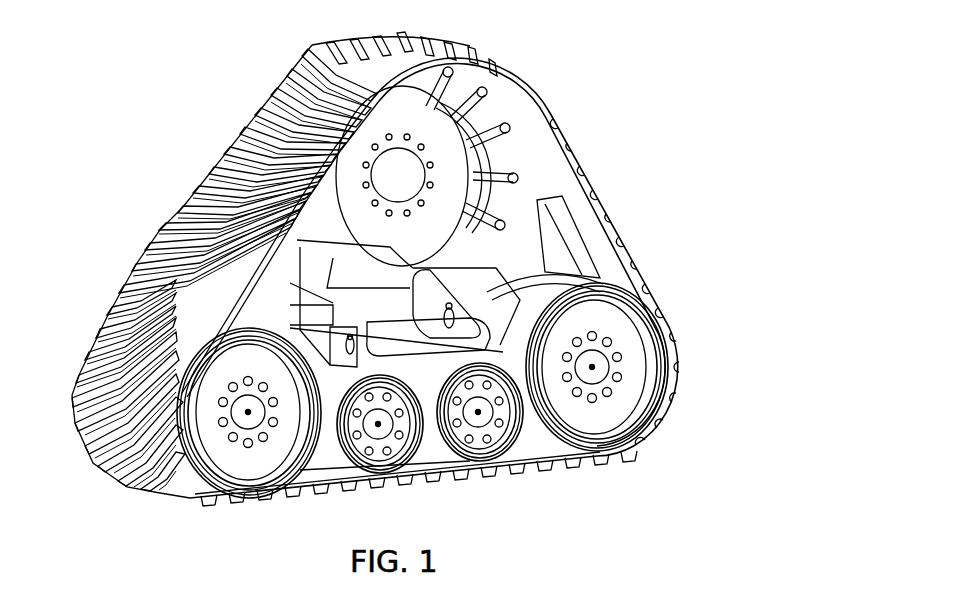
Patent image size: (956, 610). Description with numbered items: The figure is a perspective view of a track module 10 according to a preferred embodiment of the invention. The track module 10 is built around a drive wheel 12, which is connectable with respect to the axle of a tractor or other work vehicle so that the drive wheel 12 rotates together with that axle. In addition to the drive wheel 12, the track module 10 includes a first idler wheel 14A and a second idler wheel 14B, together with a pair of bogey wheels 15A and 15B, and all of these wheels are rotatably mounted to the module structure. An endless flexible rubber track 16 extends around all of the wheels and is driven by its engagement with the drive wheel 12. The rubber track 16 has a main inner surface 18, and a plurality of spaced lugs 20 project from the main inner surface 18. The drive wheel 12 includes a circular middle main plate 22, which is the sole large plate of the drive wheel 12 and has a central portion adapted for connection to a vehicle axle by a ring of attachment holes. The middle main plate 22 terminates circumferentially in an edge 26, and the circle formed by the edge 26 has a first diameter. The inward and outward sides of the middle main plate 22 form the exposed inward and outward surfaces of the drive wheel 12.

The track module 10 is at (648, 113).
The drive wheel 12 is at (450, 130).
The first idler wheel 14A is at (217, 452).
The second idler wheel 14B is at (592, 417).
The bogey wheel 15A is at (343, 460).
The bogey wheel 15B is at (500, 443).
The endless flexible rubber track 16 is at (255, 123).
The main inner surface 18 is at (545, 157).
The spaced lugs 20 is at (552, 228).
The circular middle main plate 22 is at (432, 113).
The edge 26 is at (482, 200).